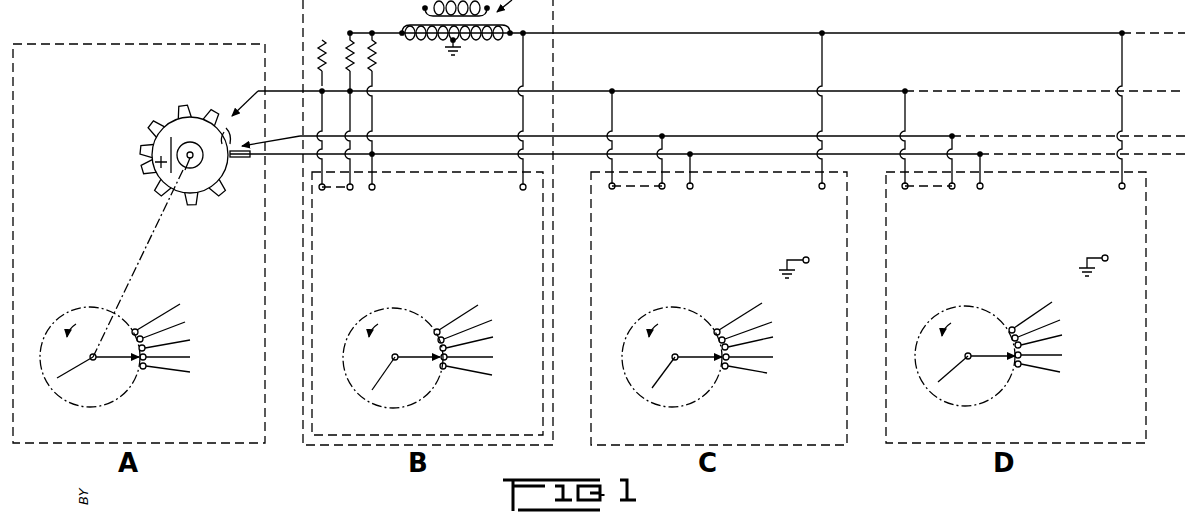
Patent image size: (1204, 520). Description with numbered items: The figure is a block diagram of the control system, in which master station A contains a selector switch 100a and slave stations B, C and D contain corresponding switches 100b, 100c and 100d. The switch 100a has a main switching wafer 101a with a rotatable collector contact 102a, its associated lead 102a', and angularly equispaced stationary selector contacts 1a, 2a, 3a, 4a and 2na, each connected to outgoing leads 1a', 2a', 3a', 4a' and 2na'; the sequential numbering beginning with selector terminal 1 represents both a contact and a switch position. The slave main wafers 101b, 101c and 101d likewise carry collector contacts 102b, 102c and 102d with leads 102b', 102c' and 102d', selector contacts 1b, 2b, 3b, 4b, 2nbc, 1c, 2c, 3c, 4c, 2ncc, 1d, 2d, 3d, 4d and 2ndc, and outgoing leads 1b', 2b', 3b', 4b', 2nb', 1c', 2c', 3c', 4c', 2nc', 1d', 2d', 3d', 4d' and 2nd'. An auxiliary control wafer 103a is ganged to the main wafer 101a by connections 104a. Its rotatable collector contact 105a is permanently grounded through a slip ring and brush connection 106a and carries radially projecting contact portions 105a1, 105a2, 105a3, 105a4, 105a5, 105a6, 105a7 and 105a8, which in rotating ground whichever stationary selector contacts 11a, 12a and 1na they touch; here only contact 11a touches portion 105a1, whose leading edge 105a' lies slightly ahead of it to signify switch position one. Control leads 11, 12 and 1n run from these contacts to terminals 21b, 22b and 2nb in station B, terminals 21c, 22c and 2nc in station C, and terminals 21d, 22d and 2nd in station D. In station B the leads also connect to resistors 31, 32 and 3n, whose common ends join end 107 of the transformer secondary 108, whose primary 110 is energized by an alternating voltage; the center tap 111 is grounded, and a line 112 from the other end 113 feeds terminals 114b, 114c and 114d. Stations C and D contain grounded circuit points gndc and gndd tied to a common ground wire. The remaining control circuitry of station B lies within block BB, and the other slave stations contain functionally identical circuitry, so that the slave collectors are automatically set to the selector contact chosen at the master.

The selector terminal 1 is at (509, 6).
The resistor 3n is at (318, 42).
The resistor 31 is at (378, 55).
The resistor 32 is at (349, 68).
The end of secondary 107 is at (402, 28).
The secondary 108 is at (446, 40).
The primary 110 is at (456, 8).
The center tap 111 is at (462, 48).
The other end of secondary 113 is at (510, 30).
The line 112 is at (757, 33).
The outgoing control lead 1n is at (700, 91).
The outgoing control lead 12 is at (686, 135).
The outgoing control lead 11 is at (712, 154).
The selector contact 1na is at (222, 85).
The selector contact 12a is at (262, 139).
The selector contact 11a is at (237, 158).
The auxiliary control switch wafer 103a is at (149, 97).
The collector contact 105a is at (184, 190).
The leading edge 105a' is at (245, 128).
The projecting contact portion 105a1 is at (226, 195).
The projecting contact portion 105a2 is at (200, 208).
The projecting contact portion 105a3 is at (157, 194).
The projecting contact portion 105a4 is at (143, 171).
The projecting contact portion 105a5 is at (140, 151).
The projecting contact portion 105a6 is at (150, 127).
The projecting contact portion 105a7 is at (165, 92).
The projecting contact portion 105a8 is at (212, 109).
The slip ring and brush connection 106a is at (166, 139).
The connections 104a is at (152, 255).
The selector switch 100a is at (71, 237).
The main switching wafer 101a is at (166, 405).
The collector contact 102a is at (110, 369).
The associated lead 102a' is at (85, 380).
The selector contact 1a is at (134, 369).
The selector contact 2a is at (125, 347).
The selector contact 3a is at (125, 337).
The selector contact 4a is at (136, 320).
The last selector contact 2na is at (157, 379).
The outgoing lead 1a' is at (181, 349).
The outgoing lead 2a' is at (179, 334).
The outgoing lead 3a' is at (175, 319).
The outgoing lead 4a' is at (169, 306).
The outgoing lead 2na' is at (186, 368).
The block BB is at (437, 240).
The selector switch 100b is at (351, 265).
The terminal 2nb is at (334, 156).
The terminal 22b is at (352, 190).
The terminal 21b is at (375, 187).
The terminal 114b is at (523, 190).
The main wafer 101b is at (458, 406).
The collector contact 102b is at (412, 373).
The associated lead 102b' is at (372, 373).
The selector contact 1b is at (435, 368).
The selector contact 2b is at (425, 343).
The selector contact 3b is at (423, 334).
The selector contact 4b is at (438, 320).
The last selector contact 2nbc is at (445, 369).
The outgoing lead 1b' is at (484, 348).
The outgoing lead 2b' is at (483, 334).
The outgoing lead 3b' is at (478, 318).
The outgoing lead 4b' is at (468, 305).
The outgoing lead 2nb' is at (486, 367).
The selector switch 100c is at (634, 262).
The grounded circuit point gndc is at (794, 267).
The terminal 2nc is at (621, 154).
The terminal 22c is at (660, 189).
The terminal 21c is at (693, 188).
The terminal 114c is at (822, 189).
The main wafer 101c is at (740, 410).
The collector contact 102c is at (695, 372).
The associated lead 102c' is at (654, 372).
The selector contact 1c is at (716, 367).
The selector contact 2c is at (708, 343).
The selector contact 3c is at (703, 334).
The selector contact 4c is at (721, 318).
The last selector contact 2ncc is at (727, 369).
The outgoing lead 1c' is at (765, 349).
The outgoing lead 2c' is at (763, 334).
The outgoing lead 3c' is at (758, 320).
The outgoing lead 4c' is at (749, 307).
The outgoing lead 2nc' is at (766, 374).
The selector switch 100d is at (937, 252).
The grounded circuit point gndd is at (1093, 265).
The terminal 2nd is at (914, 154).
The terminal 22d is at (950, 189).
The terminal 21d is at (983, 188).
The terminal 114d is at (1122, 189).
The main wafer 101d is at (1040, 410).
The collector contact 102d is at (980, 375).
The associated lead 102d' is at (945, 369).
The selector contact 1d is at (1008, 366).
The selector contact 2d is at (1000, 342).
The selector contact 3d is at (995, 331).
The selector contact 4d is at (1014, 317).
The last selector contact 2ndc is at (1020, 367).
The outgoing lead 1d' is at (1055, 346).
The outgoing lead 2d' is at (1055, 332).
The outgoing lead 3d' is at (1050, 320).
The outgoing lead 4d' is at (1041, 306).
The outgoing lead 2nd' is at (1059, 372).